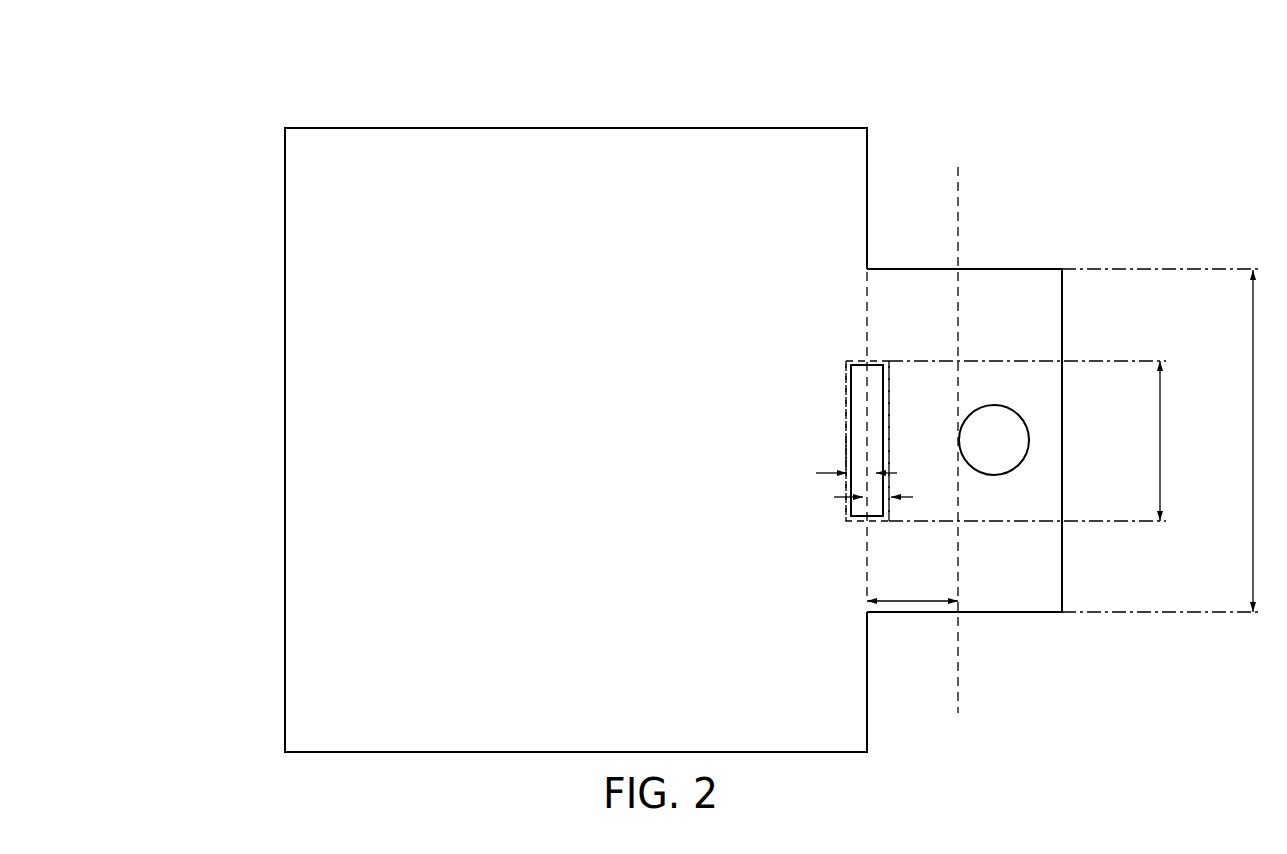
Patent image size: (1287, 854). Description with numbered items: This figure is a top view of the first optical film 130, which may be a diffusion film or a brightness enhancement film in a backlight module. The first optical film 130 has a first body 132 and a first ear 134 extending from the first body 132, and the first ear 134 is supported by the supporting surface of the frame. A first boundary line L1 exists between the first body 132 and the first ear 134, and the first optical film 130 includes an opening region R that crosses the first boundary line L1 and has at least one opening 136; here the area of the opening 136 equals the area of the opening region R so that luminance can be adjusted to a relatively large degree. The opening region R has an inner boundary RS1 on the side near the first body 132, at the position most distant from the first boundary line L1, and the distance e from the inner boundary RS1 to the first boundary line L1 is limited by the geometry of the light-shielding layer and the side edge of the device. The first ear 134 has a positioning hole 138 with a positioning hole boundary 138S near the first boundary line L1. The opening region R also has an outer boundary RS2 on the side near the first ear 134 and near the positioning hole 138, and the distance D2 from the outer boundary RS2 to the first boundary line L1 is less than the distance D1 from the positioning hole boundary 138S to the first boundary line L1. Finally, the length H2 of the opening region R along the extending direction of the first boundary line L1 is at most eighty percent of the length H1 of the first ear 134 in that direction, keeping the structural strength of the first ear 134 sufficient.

The first optical film 130 is at (164, 50).
The first body 132 is at (395, 157).
The first ear 134 is at (1019, 285).
The opening 136 is at (841, 389).
The positioning hole 138 is at (1026, 402).
The positioning hole boundary 138S is at (958, 187).
The first boundary line L1 is at (866, 288).
The inner boundary RS1 is at (845, 363).
The outer boundary RS2 is at (889, 375).
The opening region R is at (836, 456).
The distance from the inner boundary to the first boundary line e is at (858, 474).
The distance from the positioning hole boundary to the first boundary line D1 is at (912, 590).
The distance from the outer boundary to the first boundary line D2 is at (873, 498).
The length of the first ear H1 is at (1254, 441).
The length of the opening region H2 is at (1158, 441).